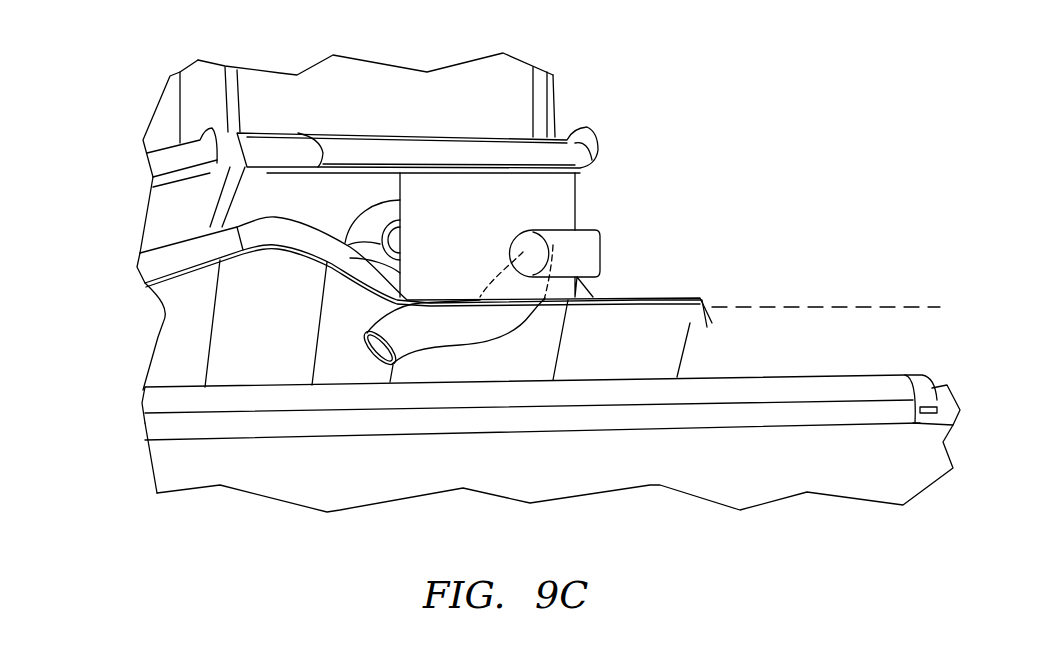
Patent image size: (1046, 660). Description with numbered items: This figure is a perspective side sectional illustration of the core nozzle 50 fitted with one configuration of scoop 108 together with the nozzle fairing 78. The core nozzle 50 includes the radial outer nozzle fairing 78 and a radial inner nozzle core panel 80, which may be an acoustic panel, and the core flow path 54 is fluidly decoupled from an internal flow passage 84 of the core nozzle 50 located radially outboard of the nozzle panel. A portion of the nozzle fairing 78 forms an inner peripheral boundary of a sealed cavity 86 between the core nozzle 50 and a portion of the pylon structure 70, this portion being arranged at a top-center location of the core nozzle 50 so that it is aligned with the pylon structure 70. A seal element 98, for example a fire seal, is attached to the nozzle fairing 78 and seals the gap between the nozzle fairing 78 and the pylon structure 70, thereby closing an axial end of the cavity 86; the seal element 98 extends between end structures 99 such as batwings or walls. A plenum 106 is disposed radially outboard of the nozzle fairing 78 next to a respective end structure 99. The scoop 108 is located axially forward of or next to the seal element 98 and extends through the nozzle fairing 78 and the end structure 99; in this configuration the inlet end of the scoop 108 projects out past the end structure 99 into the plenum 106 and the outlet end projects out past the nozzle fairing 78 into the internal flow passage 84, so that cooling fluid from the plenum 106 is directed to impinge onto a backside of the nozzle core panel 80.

The core nozzle 50 is at (231, 449).
The core flow path 54 is at (343, 481).
The pylon structure 70 is at (146, 123).
The nozzle fairing 78 is at (140, 268).
The nozzle core panel 80 is at (142, 422).
The internal flow passage 84 is at (272, 351).
The cavity 86 is at (197, 225).
The seal element 98 is at (353, 198).
The end structure 99 is at (557, 195).
The plenum 106 is at (767, 226).
The scoop 108 is at (590, 250).